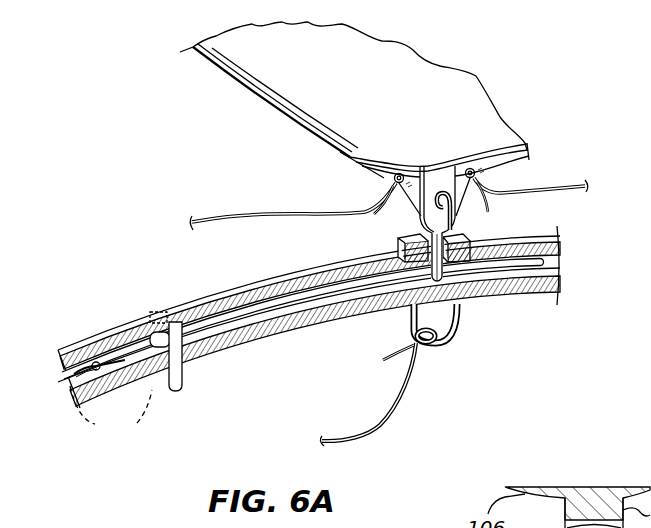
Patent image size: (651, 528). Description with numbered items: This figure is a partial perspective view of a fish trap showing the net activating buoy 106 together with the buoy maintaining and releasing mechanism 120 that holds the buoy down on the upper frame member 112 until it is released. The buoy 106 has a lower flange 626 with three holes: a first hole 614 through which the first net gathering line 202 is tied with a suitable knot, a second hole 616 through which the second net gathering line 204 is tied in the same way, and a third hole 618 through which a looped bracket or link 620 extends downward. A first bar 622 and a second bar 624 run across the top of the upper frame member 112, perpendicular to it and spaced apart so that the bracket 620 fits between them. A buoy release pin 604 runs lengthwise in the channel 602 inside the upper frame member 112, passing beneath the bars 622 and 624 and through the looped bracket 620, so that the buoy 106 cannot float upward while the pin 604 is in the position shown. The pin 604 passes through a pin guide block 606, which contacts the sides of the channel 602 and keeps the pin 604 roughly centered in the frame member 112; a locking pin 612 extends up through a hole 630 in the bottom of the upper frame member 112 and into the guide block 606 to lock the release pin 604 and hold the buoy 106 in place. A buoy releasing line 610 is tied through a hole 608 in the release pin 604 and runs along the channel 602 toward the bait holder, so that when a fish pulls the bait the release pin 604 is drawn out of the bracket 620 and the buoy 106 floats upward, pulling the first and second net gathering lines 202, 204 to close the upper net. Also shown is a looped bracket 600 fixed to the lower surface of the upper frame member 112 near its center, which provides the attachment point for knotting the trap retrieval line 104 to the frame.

The buoy maintaining and releasing mechanism 120 is at (137, 77).
The net activating buoy 106 is at (362, 88).
The upper frame member 112 is at (272, 273).
The first net gathering line 202 is at (208, 213).
The second net gathering line 204 is at (586, 188).
The first hole 614 is at (352, 160).
The second hole 616 is at (494, 178).
The third hole 618 is at (435, 176).
The lower flange 626 is at (424, 172).
The first bar 622 is at (392, 243).
The looped bracket 620 is at (468, 232).
The second bar 624 is at (493, 270).
The looped bracket 600 is at (452, 345).
The trap retrieval line 104 is at (388, 428).
The buoy release pin 604 is at (345, 298).
The channel 602 is at (270, 333).
The pin guide block 606 is at (178, 390).
The locking pin 612 is at (170, 385).
The hole 630 is at (111, 418).
The hole 608 is at (104, 348).
The buoy releasing line 610 is at (54, 362).